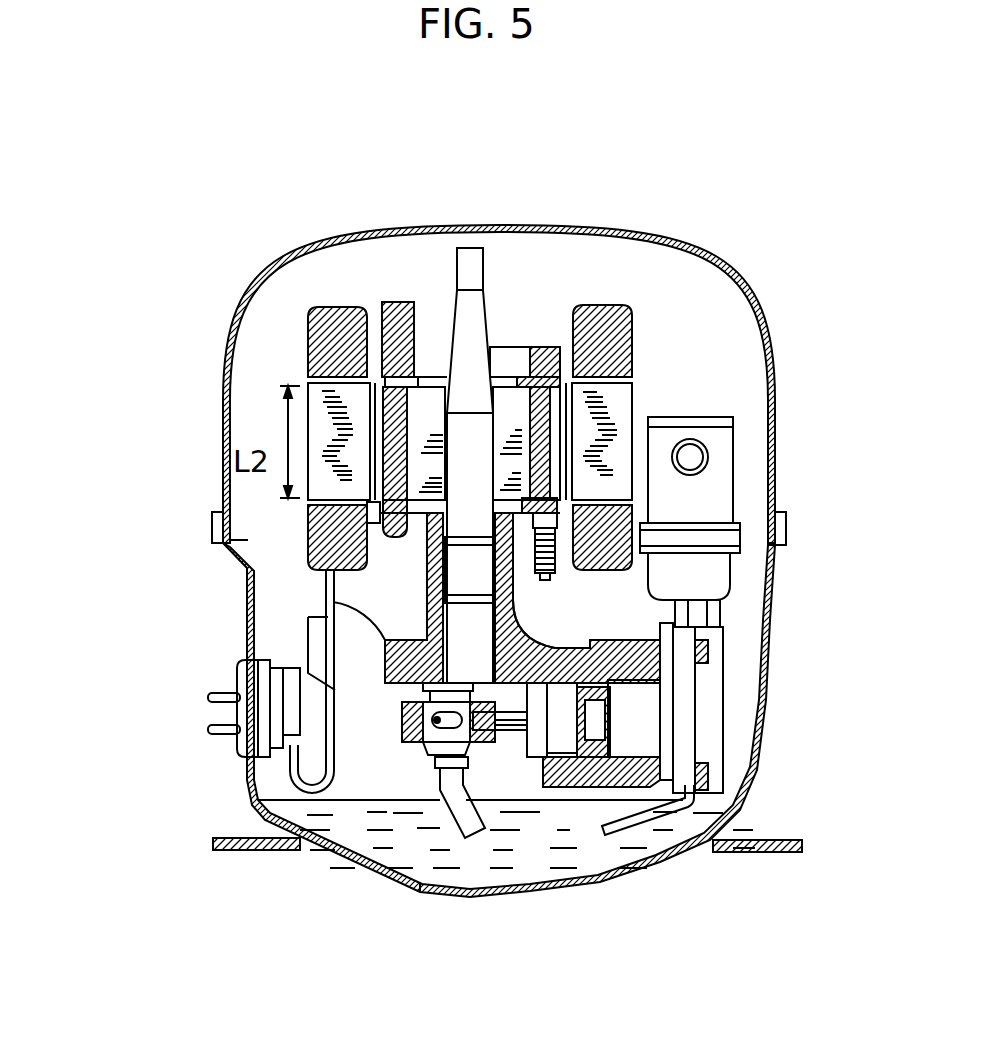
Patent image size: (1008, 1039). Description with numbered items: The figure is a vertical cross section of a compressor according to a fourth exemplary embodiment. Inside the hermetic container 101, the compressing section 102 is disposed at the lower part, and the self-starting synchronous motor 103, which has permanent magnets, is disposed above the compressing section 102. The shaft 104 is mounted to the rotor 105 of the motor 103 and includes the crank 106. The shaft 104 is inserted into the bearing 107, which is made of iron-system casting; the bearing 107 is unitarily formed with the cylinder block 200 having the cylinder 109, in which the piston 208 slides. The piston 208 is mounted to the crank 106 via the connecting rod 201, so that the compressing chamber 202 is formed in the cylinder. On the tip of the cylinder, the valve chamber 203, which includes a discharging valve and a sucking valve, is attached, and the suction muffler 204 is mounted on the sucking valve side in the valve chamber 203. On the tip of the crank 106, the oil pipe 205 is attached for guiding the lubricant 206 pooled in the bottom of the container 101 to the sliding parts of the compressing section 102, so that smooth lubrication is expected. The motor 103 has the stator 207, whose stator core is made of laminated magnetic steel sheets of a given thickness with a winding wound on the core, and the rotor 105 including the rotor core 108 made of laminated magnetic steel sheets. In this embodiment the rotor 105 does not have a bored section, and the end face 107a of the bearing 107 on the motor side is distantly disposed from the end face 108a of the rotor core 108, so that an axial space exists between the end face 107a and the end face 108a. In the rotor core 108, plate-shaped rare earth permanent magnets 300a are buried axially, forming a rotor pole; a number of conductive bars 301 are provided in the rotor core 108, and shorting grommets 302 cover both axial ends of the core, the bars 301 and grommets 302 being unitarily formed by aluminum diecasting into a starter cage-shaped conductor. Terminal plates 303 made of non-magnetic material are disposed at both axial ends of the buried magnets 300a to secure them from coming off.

The hermetic container 101 is at (292, 263).
The compressing section 102 is at (747, 640).
The self-starting synchronous motor 103 is at (433, 411).
The shaft 104 is at (473, 660).
The rotor 105 is at (494, 361).
The crank 106 is at (433, 740).
The bearing 107 is at (488, 606).
The end face of bearing 107a is at (433, 526).
The rotor core 108 is at (420, 400).
The end face of rotor core 108a is at (508, 477).
The cylinder 109 is at (620, 663).
The cylinder block 200 is at (590, 650).
The connecting rod 201 is at (507, 730).
The compressing chamber 202 is at (647, 720).
The valve chamber 203 is at (695, 745).
The suction muffler 204 is at (710, 497).
The oil pipe 205 is at (457, 812).
The lubricant 206 is at (660, 840).
The stator 207 is at (318, 418).
The piston 208 is at (590, 745).
The permanent magnets (first pair) 300a is at (538, 443).
The conductive bars 301 is at (627, 353).
The shorting grommets 302 is at (543, 350).
The terminal plates 303 is at (417, 367).